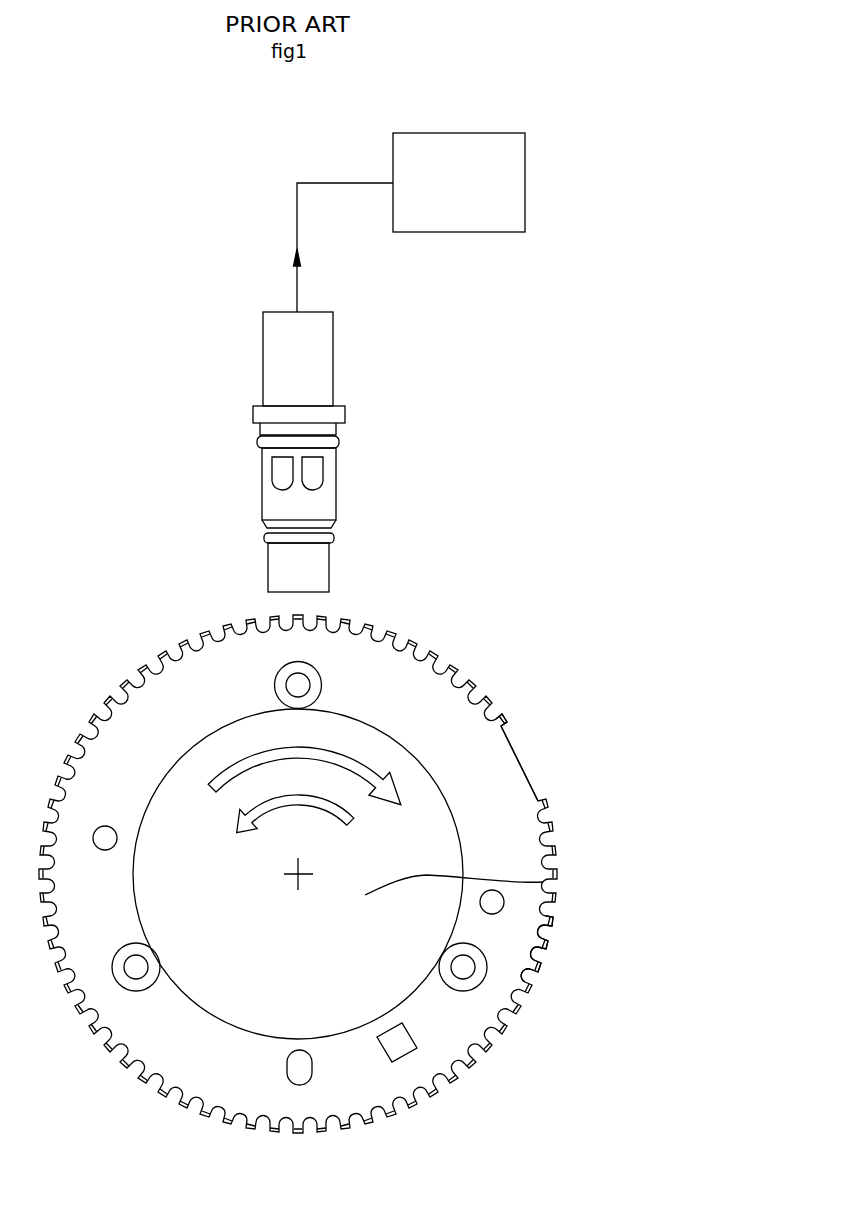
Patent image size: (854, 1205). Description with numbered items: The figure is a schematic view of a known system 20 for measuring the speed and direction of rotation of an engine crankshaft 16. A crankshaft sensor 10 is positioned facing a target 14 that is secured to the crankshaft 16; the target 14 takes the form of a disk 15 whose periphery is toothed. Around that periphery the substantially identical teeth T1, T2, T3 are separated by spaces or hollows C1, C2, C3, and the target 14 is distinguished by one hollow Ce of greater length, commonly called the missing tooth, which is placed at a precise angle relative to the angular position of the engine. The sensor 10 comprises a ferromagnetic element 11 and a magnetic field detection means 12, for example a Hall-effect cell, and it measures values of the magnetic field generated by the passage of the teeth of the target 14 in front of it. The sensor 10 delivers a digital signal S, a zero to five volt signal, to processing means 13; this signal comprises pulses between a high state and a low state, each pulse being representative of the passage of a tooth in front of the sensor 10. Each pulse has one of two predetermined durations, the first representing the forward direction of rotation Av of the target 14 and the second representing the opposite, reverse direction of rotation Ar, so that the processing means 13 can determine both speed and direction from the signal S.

The system for measuring speed and direction of rotation of a crankshaft 20 is at (92, 480).
The crankshaft sensor 10 is at (352, 366).
The ferromagnetic element 11 is at (322, 574).
The magnetic field detection means 12 is at (329, 490).
The processing means 13 is at (470, 147).
The target 14 is at (74, 663).
The disk 15 is at (500, 803).
The crankshaft 16 is at (543, 882).
The signal S is at (332, 247).
The forward direction of rotation Av is at (304, 764).
The reverse direction of rotation Ar is at (295, 817).
The hollow of greater length (missing tooth) Ce is at (537, 730).
The tooth T1 is at (554, 921).
The space (hollow) C1 is at (544, 929).
The tooth T2 is at (548, 945).
The space (hollow) C2 is at (537, 953).
The tooth T3 is at (541, 968).
The space (hollow) C3 is at (527, 976).